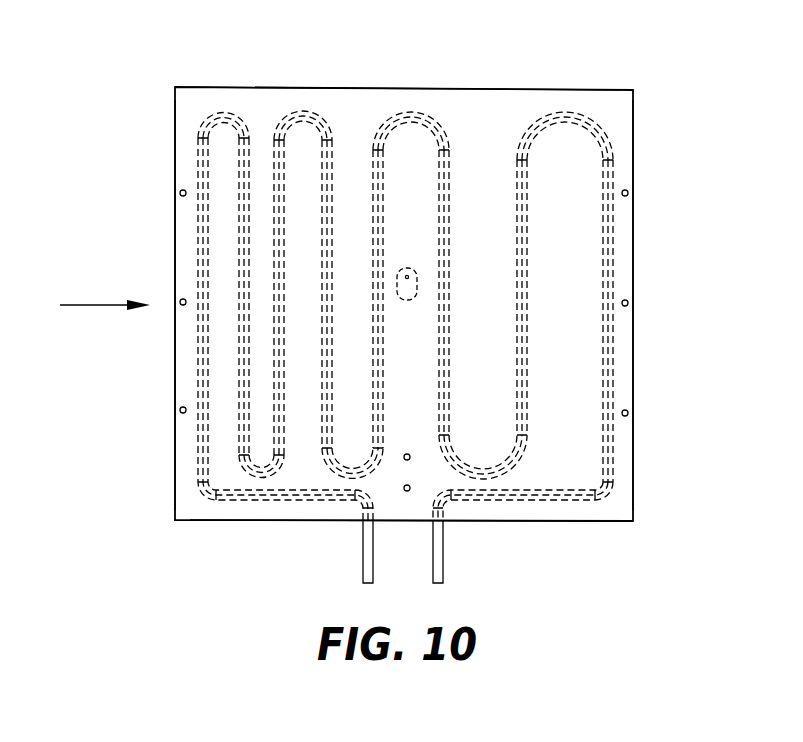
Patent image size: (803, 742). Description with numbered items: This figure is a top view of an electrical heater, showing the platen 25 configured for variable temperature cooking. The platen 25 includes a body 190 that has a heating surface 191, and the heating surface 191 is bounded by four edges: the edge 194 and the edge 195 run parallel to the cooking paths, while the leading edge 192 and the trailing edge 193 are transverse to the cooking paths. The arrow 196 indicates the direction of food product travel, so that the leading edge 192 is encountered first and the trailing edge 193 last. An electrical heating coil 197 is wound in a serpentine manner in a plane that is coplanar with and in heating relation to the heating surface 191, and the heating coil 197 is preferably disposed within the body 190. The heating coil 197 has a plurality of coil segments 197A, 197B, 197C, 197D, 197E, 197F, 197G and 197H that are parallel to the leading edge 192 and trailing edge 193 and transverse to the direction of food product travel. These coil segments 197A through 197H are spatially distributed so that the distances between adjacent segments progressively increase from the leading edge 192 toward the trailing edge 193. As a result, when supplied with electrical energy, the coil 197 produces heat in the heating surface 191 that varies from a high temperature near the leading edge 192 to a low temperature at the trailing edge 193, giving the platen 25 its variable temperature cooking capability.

The platen 25 is at (469, 54).
The body 190 is at (343, 80).
The heating surface 191 is at (263, 108).
The leading edge 192 is at (175, 143).
The trailing edge 193 is at (633, 130).
The edge 194 is at (556, 90).
The edge 195 is at (603, 522).
The arrow 196 is at (92, 305).
The electrical heating coil 197 is at (196, 514).
The coil segment 197A is at (197, 335).
The coil segment 197B is at (238, 385).
The coil segment 197C is at (273, 425).
The coil segment 197D is at (333, 157).
The coil segment 197E is at (382, 380).
The coil segment 197F is at (450, 262).
The coil segment 197G is at (517, 183).
The coil segment 197H is at (605, 218).